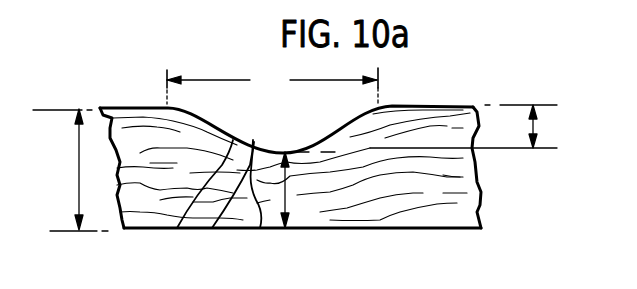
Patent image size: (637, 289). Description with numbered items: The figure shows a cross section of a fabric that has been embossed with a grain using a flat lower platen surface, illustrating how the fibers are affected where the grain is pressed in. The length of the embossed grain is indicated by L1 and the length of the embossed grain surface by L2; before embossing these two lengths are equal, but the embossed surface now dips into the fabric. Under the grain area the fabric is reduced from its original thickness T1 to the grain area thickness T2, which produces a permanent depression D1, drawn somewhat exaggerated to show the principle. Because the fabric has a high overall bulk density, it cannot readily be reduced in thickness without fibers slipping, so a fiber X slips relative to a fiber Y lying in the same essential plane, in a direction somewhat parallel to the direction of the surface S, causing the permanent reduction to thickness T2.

The length of an embossed grain L1 is at (276, 92).
The length of the embossed grain surface L2 is at (178, 100).
The original thickness T1 is at (33, 163).
The grain area thickness T2 is at (280, 192).
The permanent depression D1 is at (578, 113).
The fiber X is at (260, 228).
The fiber Y is at (177, 228).
The surface S is at (212, 228).